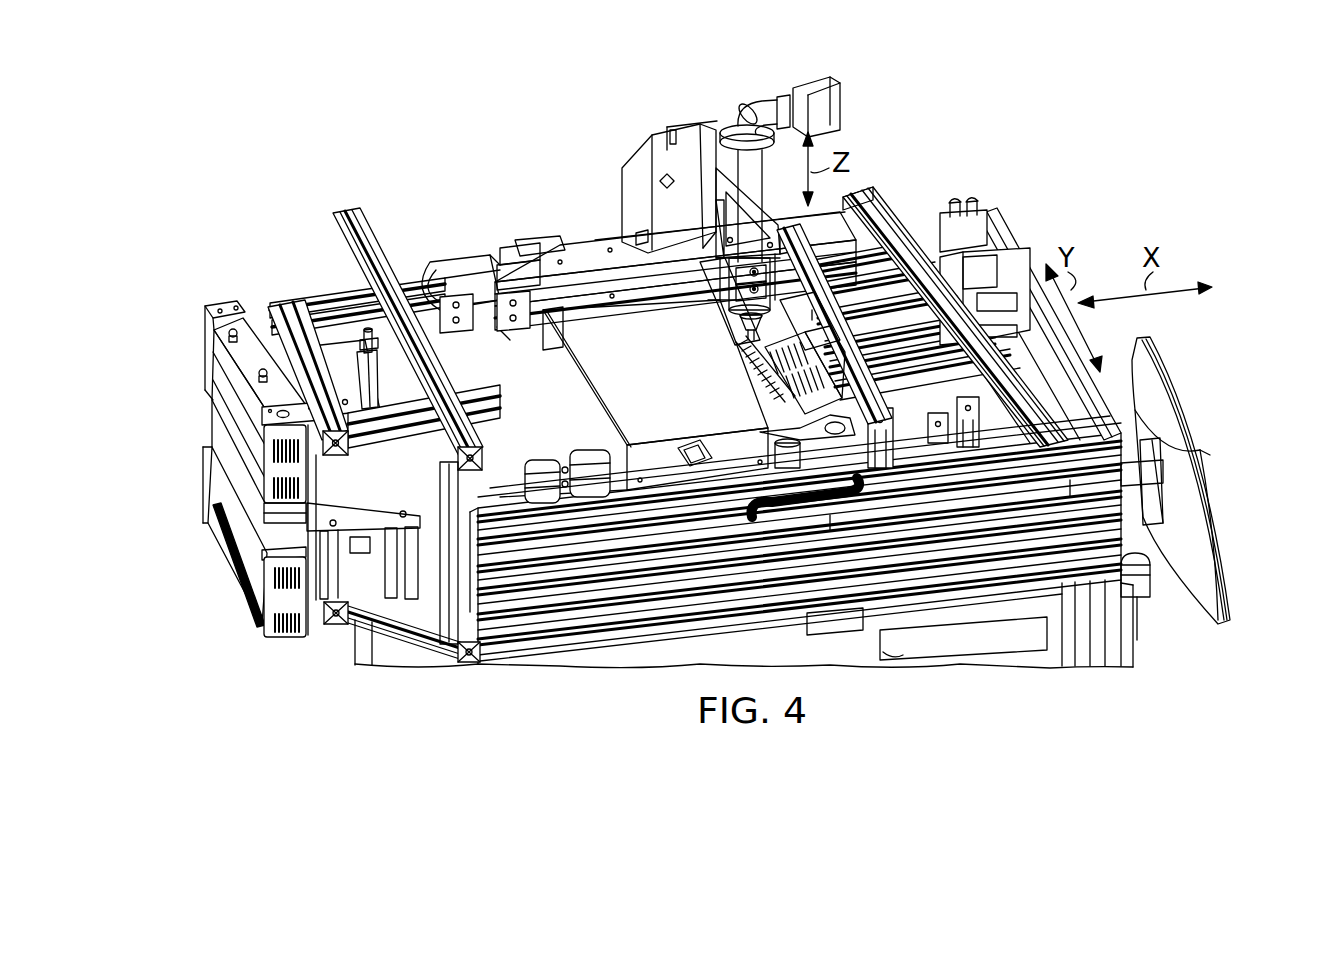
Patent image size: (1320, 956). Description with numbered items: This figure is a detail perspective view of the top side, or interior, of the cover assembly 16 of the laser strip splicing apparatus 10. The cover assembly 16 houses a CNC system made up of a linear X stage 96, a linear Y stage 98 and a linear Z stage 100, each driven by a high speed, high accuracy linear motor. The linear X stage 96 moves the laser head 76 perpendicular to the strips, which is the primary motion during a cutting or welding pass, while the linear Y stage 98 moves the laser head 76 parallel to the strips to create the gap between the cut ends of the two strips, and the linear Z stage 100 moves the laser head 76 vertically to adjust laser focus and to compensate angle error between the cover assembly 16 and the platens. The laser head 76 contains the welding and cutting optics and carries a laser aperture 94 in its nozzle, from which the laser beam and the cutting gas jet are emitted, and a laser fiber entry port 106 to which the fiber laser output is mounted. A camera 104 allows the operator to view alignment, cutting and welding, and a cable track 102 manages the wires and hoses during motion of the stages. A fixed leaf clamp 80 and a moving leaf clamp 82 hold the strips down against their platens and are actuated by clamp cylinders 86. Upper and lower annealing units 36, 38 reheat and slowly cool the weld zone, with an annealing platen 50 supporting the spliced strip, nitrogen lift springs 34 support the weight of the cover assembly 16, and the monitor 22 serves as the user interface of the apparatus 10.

The apparatus 10 is at (405, 150).
The cover assembly 16 is at (1045, 186).
The monitor 22 is at (1192, 425).
The nitrogen lift springs 34 is at (362, 378).
The upper annealing unit 36 is at (218, 422).
The lower annealing unit 38 is at (225, 498).
The annealing platen 50 is at (347, 623).
The laser head 76 is at (713, 308).
The fixed leaf clamp 80 is at (743, 386).
The moving leaf clamp 82 is at (780, 400).
The clamp cylinders 86 is at (773, 443).
The laser aperture 94 is at (737, 330).
The linear X stage 96 is at (618, 387).
The linear Y stage 98 is at (593, 230).
The linear Z stage 100 is at (628, 186).
The cable track 102 is at (483, 290).
The camera 104 is at (803, 90).
The laser fiber entry port 106 is at (793, 217).